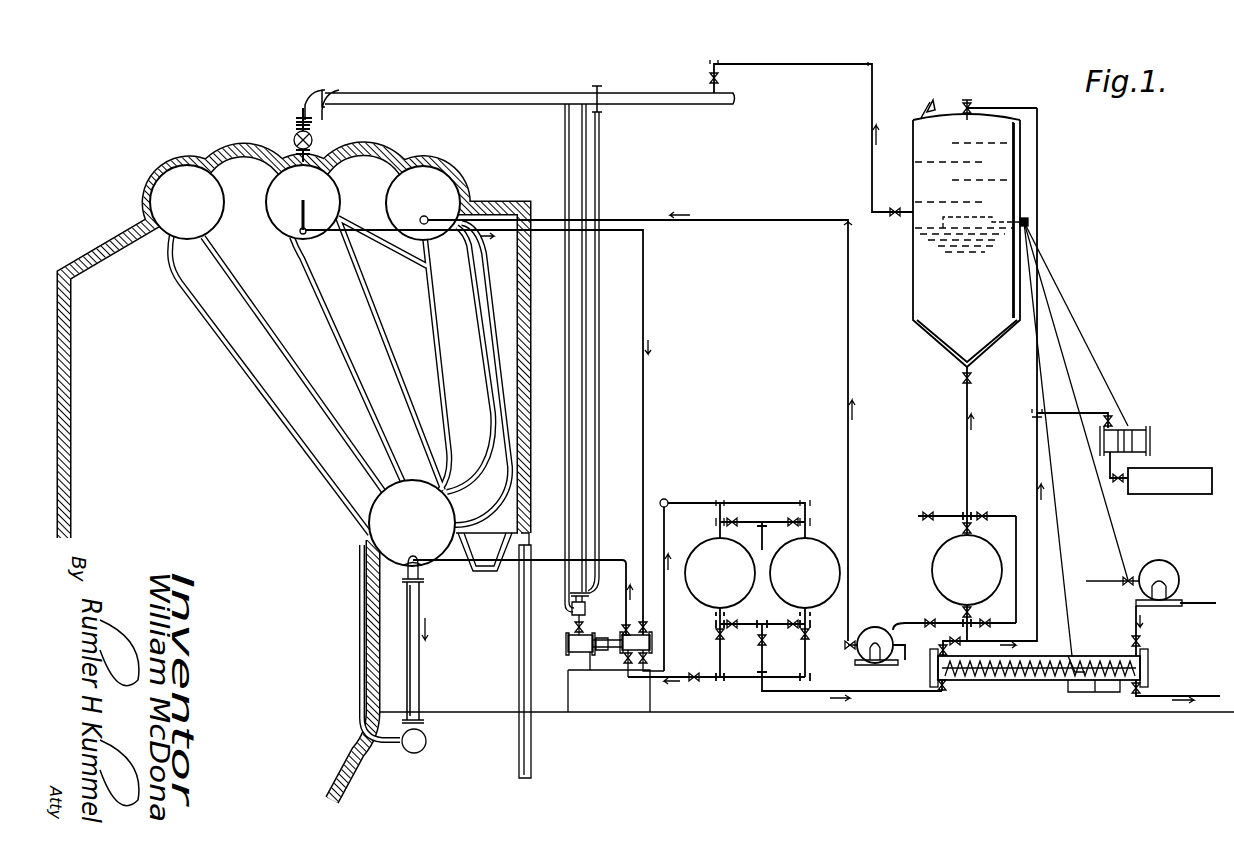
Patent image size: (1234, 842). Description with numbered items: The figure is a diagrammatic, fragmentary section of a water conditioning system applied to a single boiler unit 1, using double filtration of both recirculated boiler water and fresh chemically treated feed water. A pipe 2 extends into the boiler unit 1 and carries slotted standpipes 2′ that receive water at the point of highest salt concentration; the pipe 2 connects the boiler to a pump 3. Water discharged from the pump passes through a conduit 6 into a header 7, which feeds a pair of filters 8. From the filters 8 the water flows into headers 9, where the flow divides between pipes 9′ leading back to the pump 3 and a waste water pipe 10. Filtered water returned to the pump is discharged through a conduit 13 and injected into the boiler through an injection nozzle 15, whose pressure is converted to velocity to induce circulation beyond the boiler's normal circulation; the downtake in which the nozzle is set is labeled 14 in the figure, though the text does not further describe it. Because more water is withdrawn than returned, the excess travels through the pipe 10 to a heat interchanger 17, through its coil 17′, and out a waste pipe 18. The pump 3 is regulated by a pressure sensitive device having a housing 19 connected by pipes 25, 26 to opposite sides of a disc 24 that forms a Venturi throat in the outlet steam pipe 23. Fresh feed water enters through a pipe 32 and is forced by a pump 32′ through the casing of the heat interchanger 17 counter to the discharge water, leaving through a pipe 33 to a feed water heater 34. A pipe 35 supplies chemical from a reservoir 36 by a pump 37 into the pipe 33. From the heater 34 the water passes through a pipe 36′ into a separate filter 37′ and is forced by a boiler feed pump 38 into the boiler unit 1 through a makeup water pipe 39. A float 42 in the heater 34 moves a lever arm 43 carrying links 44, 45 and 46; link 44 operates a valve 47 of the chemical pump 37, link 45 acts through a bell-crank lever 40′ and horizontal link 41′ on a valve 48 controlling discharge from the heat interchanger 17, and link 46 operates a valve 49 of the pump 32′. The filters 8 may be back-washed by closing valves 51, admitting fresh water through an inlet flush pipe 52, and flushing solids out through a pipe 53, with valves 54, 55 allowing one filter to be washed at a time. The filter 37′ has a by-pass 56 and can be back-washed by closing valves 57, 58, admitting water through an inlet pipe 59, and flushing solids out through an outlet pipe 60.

The boiler unit 1 is at (442, 182).
The slotted standpipes 2′ is at (298, 208).
The pipe 2 is at (650, 428).
The pump 3 is at (621, 632).
The conduit 6 is at (667, 640).
The header 7 is at (666, 500).
The filters 8 is at (716, 542).
The headers 9 is at (742, 679).
The pipes 9′ is at (696, 683).
The waste water pipe 10 is at (803, 700).
The conduit 13 is at (545, 560).
The blow-off pipe 14 is at (420, 655).
The injection nozzle 15 is at (368, 578).
The heat interchanger 17 is at (1092, 658).
The coil 17′ is at (985, 682).
The waste pipe 18 is at (1160, 698).
The housing 19 is at (576, 595).
The outlet steam pipe 23 is at (510, 92).
The disc 24 is at (603, 92).
The pipe 25 is at (580, 373).
The pipe 26 is at (592, 373).
The pipe 32 is at (1137, 634).
The pump 32′ is at (1176, 580).
The pipe 33 is at (1037, 600).
The feed water heater 34 is at (975, 233).
The pipe 35 is at (1090, 413).
The reservoir 36 is at (1170, 481).
The pipe 36′ is at (972, 446).
The pump 37 is at (1130, 462).
The filter 37′ is at (967, 570).
The boiler feed pump 38 is at (882, 626).
The makeup water pipe 39 is at (747, 219).
The bell-crank lever 40′ is at (1072, 682).
The horizontal link 41′ is at (1098, 698).
The float 42 is at (1022, 205).
The lever arm 43 is at (1032, 222).
The link 44 is at (1098, 352).
The link 45 is at (1058, 562).
The link 46 is at (1112, 514).
The valve 47 is at (1145, 430).
The valve 48 is at (1140, 683).
The valve 49 is at (1148, 570).
The valves 51 is at (716, 636).
The inlet flush pipe 52 is at (793, 624).
The pipe 53 is at (766, 528).
The valve 54 is at (793, 522).
The valve 55 is at (766, 642).
The by-pass 56 is at (1018, 520).
The valve 57 is at (978, 378).
The valve 58 is at (902, 650).
The inlet pipe 59 is at (945, 618).
The outlet pipe 60 is at (940, 514).